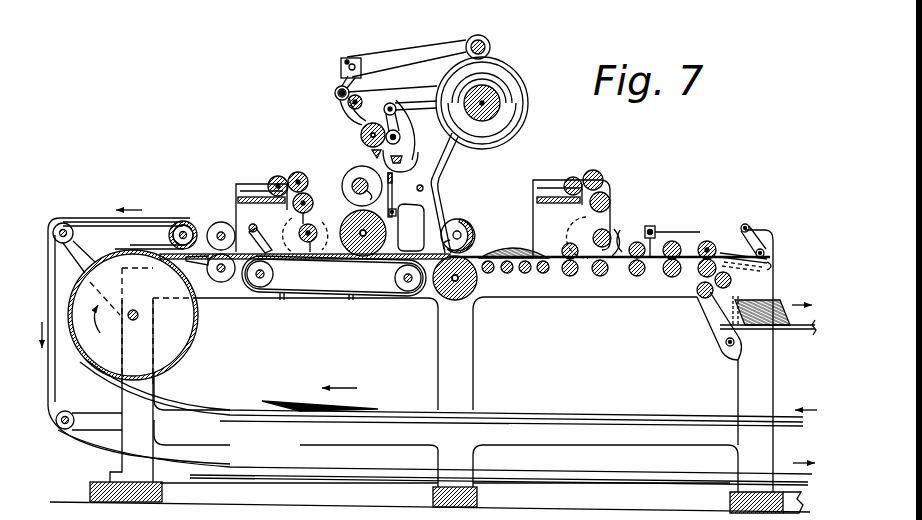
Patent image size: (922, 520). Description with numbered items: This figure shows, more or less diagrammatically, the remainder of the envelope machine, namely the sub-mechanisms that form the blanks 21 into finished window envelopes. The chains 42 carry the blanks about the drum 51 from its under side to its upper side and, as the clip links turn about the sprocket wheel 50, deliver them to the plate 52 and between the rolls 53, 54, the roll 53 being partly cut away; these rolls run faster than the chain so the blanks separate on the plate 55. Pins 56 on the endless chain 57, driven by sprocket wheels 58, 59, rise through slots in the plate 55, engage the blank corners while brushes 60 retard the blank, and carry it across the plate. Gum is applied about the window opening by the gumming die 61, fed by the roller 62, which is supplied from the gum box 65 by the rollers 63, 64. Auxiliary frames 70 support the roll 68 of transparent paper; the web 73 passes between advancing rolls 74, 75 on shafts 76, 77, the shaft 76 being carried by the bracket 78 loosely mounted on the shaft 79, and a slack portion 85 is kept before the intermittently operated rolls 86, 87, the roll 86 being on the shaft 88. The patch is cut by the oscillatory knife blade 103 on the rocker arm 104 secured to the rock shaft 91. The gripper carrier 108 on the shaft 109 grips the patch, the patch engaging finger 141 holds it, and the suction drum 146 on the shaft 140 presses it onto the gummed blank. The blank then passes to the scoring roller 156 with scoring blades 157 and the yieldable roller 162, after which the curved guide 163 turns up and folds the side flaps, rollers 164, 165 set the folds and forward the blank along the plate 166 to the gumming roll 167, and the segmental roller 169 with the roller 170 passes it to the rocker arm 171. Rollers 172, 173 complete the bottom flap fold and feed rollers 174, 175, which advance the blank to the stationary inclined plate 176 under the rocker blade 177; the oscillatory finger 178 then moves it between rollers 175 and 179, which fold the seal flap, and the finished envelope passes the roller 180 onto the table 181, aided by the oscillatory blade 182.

The blanks 21 is at (362, 410).
The chains 42 is at (564, 416).
The sprocket wheel 50 is at (183, 224).
The drum 51 is at (189, 337).
The plate 52 is at (194, 264).
The roll 53 is at (221, 222).
The roll 54 is at (223, 281).
The plate 55 is at (333, 261).
The pins 56 is at (351, 300).
The endless chain 57 is at (318, 298).
The sprocket wheel 58 is at (258, 290).
The sprocket wheel 59 is at (408, 295).
The brushes 60 is at (259, 234).
The gumming die 61 is at (317, 228).
The roller 62 is at (313, 203).
The roller 63 is at (305, 175).
The roller 64 is at (280, 176).
The gum box 65 is at (244, 183).
The roll of transparent paper 68 is at (515, 80).
The auxiliary frames 70 is at (443, 165).
The web 73 is at (400, 78).
The advancing roll 74 is at (338, 88).
The advancing roll 75 is at (363, 103).
The shaft 76 is at (337, 97).
The shaft 77 is at (349, 112).
The bracket 78 is at (343, 62).
The shaft 79 is at (354, 58).
The slack portion 85 is at (361, 133).
The roll 86 is at (365, 142).
The roll 87 is at (402, 133).
The shaft 88 is at (372, 155).
The rock shaft 91 is at (395, 104).
The oscillatory knife blade 103 is at (403, 160).
The rocker arm 104 is at (409, 148).
The gripper carrier 108 is at (405, 195).
The shaft 109 is at (354, 184).
The shaft 140 is at (387, 232).
The patch engaging finger 141 is at (415, 221).
The suction drum 146 is at (386, 240).
The scoring roller 156 is at (466, 222).
The scoring blades 157 is at (476, 228).
The roller 162 is at (458, 291).
The curved guide 163 is at (510, 250).
The roller 164 is at (582, 240).
The roller 165 is at (570, 277).
The plate 166 is at (600, 277).
The gumming roll 167 is at (620, 228).
The segmental roller 169 is at (666, 236).
The roller 170 is at (637, 277).
The rocker arm 171 is at (664, 236).
The roller 172 is at (696, 233).
The roller 173 is at (672, 278).
The roller 174 is at (709, 240).
The roller 175 is at (705, 277).
The stationary inclined plate 176 is at (772, 267).
The rocker blade 177 is at (743, 254).
The oscillatory finger 178 is at (760, 233).
The roller 179 is at (732, 281).
The roller 180 is at (702, 300).
The table 181 is at (798, 330).
The oscillatory blade 182 is at (718, 326).